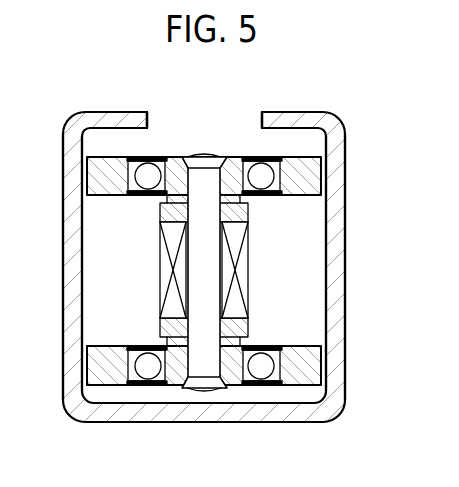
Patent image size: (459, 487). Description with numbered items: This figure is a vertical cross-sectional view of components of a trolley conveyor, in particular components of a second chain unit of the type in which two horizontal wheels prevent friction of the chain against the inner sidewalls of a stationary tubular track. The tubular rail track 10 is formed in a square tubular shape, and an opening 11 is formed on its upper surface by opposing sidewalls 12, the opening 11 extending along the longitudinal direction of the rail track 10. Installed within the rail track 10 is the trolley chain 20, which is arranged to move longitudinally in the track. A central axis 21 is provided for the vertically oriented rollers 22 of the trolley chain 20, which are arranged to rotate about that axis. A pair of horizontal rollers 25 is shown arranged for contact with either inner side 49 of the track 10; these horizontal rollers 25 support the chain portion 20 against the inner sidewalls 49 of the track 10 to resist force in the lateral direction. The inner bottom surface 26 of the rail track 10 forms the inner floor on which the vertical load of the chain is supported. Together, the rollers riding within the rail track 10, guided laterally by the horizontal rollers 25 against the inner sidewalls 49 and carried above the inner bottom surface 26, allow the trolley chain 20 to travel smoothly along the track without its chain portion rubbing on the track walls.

The tubular rail track 10 is at (345, 318).
The opening 11 is at (250, 113).
The sidewalls 12 is at (156, 114).
The trolley chain 20 is at (164, 146).
The central axis 21 is at (203, 365).
The rollers 22 is at (90, 355).
The horizontal rollers 25 is at (312, 156).
The inner bottom surface 26 is at (177, 398).
The inner sidewalls 49 is at (83, 230).